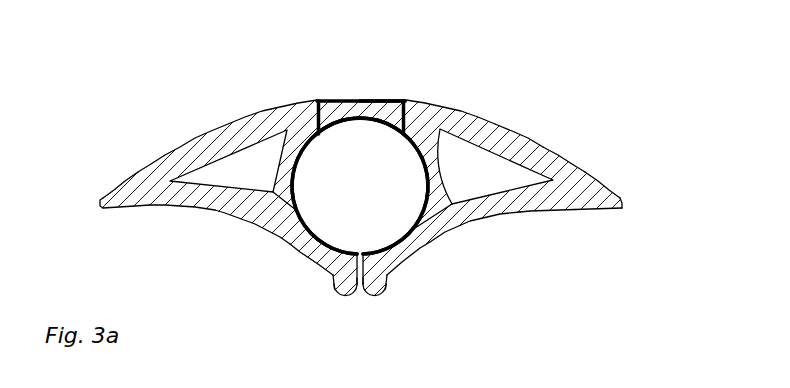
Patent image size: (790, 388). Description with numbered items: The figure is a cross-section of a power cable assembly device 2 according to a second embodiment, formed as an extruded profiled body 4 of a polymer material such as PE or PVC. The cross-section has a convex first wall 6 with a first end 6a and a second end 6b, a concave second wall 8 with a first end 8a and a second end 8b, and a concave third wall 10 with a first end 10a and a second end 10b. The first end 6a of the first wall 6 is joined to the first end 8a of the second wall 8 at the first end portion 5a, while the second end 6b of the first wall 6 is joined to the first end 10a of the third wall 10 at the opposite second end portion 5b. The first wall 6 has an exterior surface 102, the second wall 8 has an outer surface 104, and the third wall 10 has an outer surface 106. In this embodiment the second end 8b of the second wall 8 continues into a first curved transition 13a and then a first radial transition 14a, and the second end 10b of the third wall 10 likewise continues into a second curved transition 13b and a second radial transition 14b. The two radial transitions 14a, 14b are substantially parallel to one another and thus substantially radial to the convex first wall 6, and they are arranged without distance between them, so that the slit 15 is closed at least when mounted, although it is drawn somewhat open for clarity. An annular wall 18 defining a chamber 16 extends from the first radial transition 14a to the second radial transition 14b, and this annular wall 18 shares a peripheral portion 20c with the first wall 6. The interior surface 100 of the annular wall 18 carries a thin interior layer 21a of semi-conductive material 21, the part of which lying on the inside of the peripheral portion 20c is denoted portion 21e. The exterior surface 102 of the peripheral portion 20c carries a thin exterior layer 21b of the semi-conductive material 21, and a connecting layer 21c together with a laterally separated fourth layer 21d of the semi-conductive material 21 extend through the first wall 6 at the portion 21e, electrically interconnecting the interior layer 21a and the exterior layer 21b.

The power cable assembly device 2 is at (262, 58).
The extruded profiled body 4 is at (459, 55).
The first end portion 5a is at (100, 203).
The second end portion 5b is at (623, 207).
The first wall 6 is at (182, 143).
The first end of first wall 6a is at (128, 178).
The second end of first wall 6b is at (607, 184).
The second wall 8 is at (197, 210).
The first end of second wall 8a is at (137, 208).
The second end of second wall 8b is at (306, 265).
The third wall 10 is at (507, 213).
The first end of third wall 10a is at (603, 210).
The second end of third wall 10b is at (420, 255).
The first curved transition 13a is at (347, 302).
The second curved transition 13b is at (373, 302).
The first radial transition 14a is at (335, 292).
The second radial transition 14b is at (385, 291).
The slit 15 is at (359, 252).
The chamber 16 is at (410, 203).
The annular wall 18 is at (360, 119).
The peripheral portion 20c is at (393, 100).
The semi-conductive material 21 is at (384, 84).
The interior layer 21a is at (293, 177).
The exterior layer 21b is at (357, 100).
The connecting layer 21c is at (298, 108).
The fourth layer 21d is at (423, 106).
The portion of thin interior layer 21e is at (277, 158).
The interior surface 100 is at (430, 178).
The exterior surface 102 is at (513, 129).
The outer surface 104 is at (240, 219).
The outer surface 106 is at (553, 210).